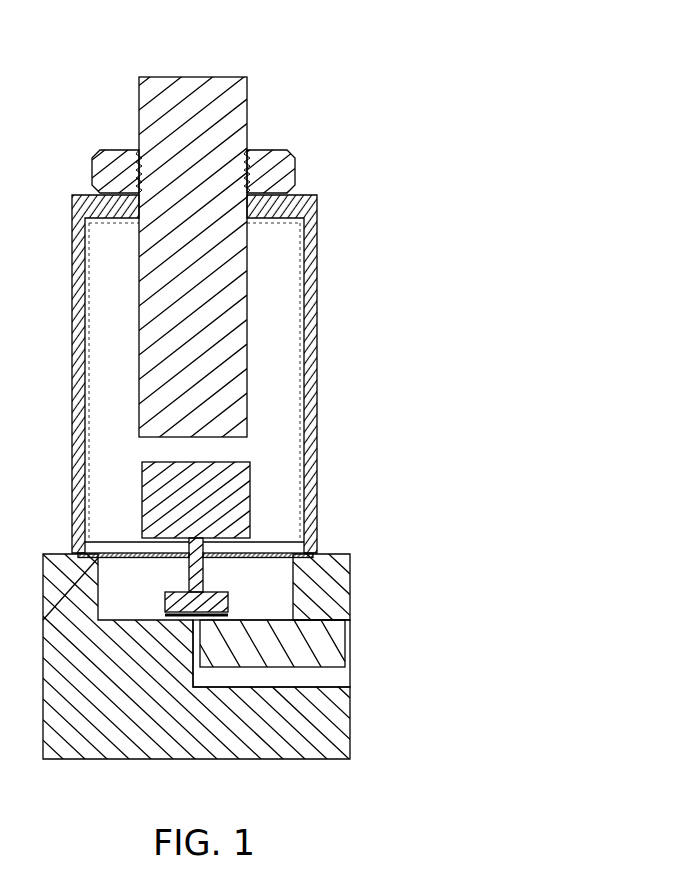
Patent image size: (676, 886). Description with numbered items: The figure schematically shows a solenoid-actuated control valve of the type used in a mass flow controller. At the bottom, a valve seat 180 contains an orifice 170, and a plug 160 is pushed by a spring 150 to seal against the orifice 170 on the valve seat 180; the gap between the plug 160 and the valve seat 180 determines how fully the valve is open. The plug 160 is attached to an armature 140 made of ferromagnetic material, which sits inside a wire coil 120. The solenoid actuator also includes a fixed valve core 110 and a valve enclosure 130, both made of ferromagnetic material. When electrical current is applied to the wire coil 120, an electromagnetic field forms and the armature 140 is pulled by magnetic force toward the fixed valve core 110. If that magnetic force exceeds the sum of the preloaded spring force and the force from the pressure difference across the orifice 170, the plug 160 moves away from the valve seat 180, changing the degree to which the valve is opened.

The valve core 110 is at (252, 82).
The wire coil 120 is at (284, 214).
The valve enclosure 130 is at (320, 336).
The armature 140 is at (245, 457).
The spring 150 is at (280, 549).
The plug 160 is at (229, 605).
The orifice 170 is at (202, 638).
The valve seat 180 is at (352, 644).